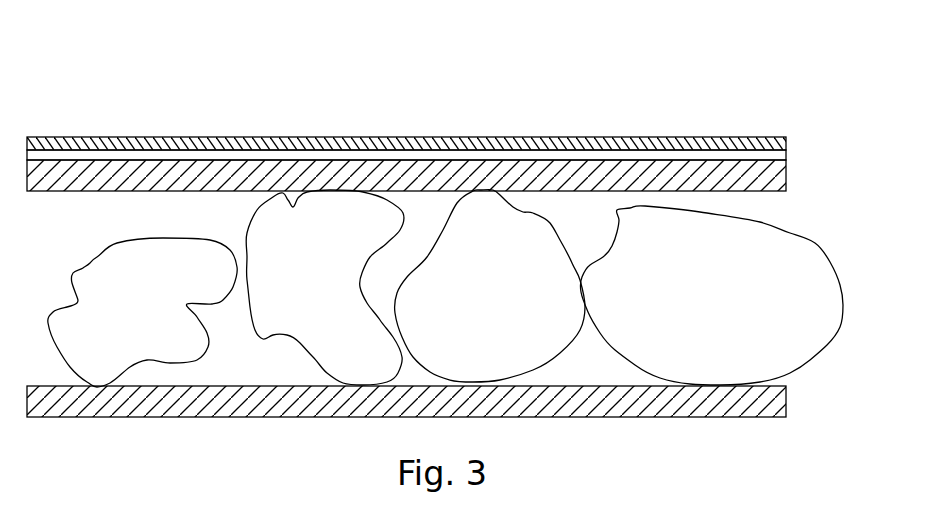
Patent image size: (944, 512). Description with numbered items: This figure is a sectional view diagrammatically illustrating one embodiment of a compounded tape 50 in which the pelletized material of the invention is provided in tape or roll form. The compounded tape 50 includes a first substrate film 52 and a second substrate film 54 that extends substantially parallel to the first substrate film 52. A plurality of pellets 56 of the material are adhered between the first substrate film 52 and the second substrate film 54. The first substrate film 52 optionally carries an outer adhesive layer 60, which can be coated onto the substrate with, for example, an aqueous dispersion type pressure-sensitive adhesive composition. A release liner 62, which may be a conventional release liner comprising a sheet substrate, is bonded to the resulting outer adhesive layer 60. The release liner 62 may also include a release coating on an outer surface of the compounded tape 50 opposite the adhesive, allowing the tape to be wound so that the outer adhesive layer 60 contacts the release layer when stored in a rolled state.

The compounded tape 50 is at (506, 83).
The first substrate film 52 is at (786, 171).
The second substrate film 54 is at (786, 386).
The pellets 56 is at (818, 243).
The outer adhesive layer 60 is at (786, 153).
The release liner 62 is at (786, 137).